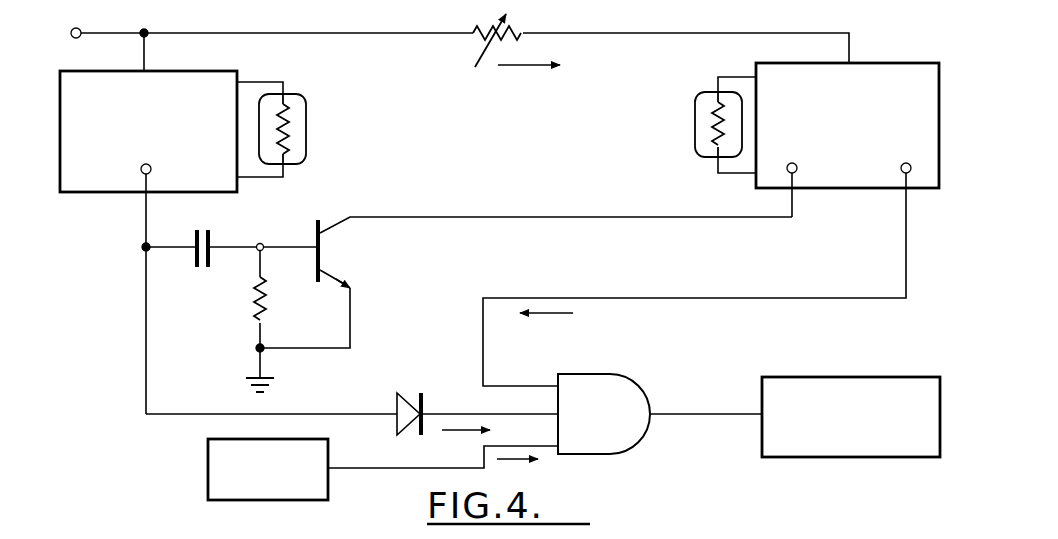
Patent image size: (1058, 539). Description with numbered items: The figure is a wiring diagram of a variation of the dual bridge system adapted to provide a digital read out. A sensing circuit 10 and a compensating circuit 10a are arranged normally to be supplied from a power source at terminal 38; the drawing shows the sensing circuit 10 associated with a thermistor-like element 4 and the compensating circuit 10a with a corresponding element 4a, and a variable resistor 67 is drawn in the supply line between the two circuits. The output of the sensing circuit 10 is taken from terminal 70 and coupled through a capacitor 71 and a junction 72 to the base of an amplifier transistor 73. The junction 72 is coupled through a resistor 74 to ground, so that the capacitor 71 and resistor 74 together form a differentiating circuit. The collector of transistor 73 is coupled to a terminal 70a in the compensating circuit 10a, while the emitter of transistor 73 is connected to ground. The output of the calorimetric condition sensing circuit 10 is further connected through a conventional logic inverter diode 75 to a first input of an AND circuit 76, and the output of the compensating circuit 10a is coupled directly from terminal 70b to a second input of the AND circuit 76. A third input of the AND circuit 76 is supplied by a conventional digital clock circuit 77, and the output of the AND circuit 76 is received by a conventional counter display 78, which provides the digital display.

The terminal 38 is at (75, 28).
The sensing circuit 10 is at (228, 71).
The thermistor 4 is at (306, 130).
The variable resistor 67 is at (473, 33).
The compensating circuit 10a is at (880, 63).
The compensating thermistor 4a is at (695, 132).
The terminal 70 is at (143, 175).
The terminal 70a is at (797, 173).
The terminal 70b is at (911, 173).
The capacitor 71 is at (197, 267).
The junction 72 is at (260, 243).
The amplifier transistor 73 is at (336, 216).
The resistor 74 is at (266, 300).
The logic inverter diode 75 is at (405, 393).
The AND circuit 76 is at (636, 386).
The digital clock circuit 77 is at (208, 468).
The counter display 78 is at (848, 377).